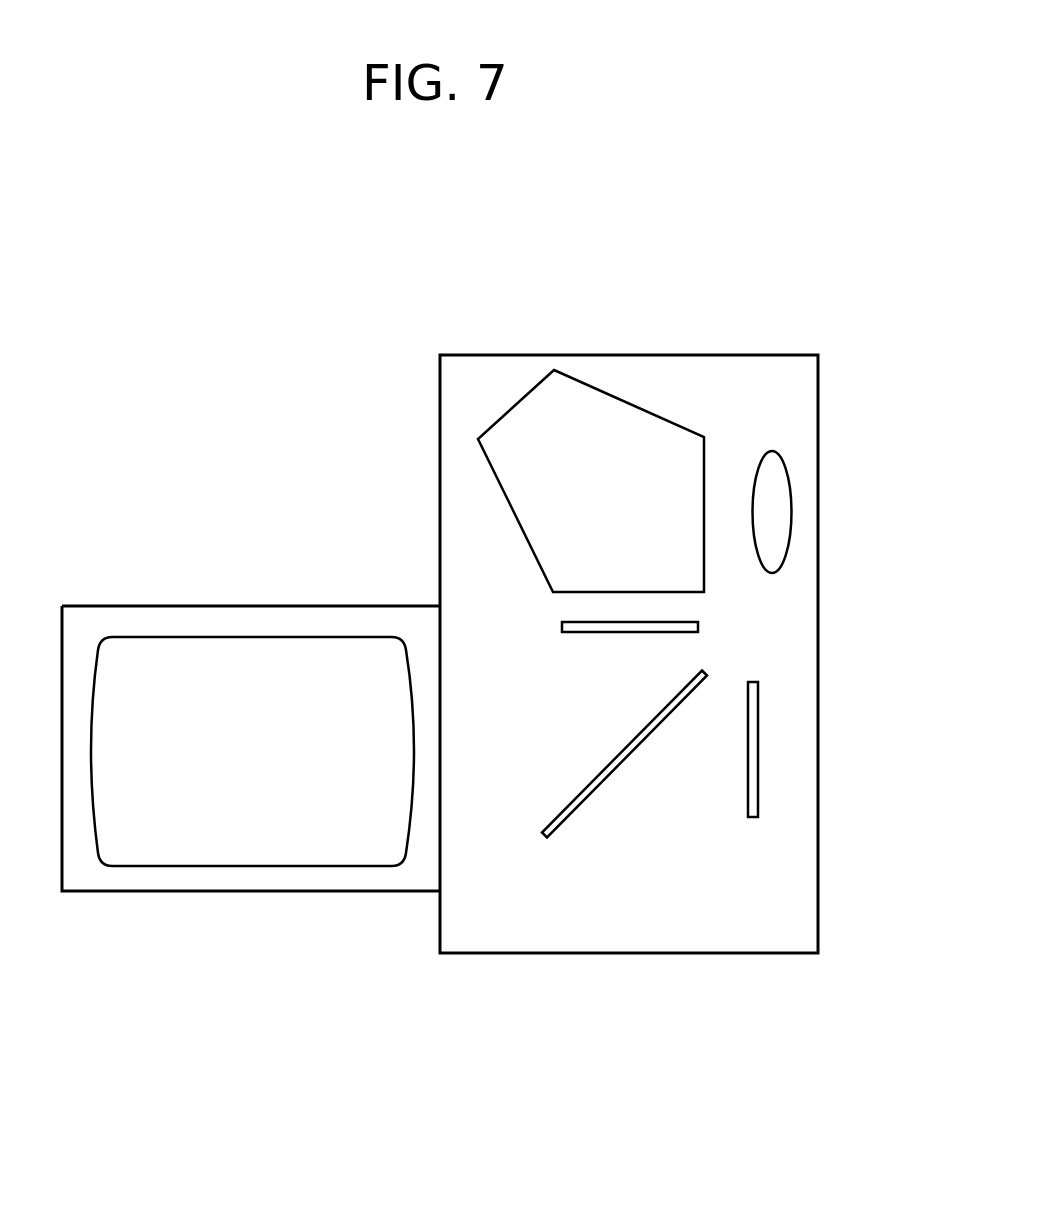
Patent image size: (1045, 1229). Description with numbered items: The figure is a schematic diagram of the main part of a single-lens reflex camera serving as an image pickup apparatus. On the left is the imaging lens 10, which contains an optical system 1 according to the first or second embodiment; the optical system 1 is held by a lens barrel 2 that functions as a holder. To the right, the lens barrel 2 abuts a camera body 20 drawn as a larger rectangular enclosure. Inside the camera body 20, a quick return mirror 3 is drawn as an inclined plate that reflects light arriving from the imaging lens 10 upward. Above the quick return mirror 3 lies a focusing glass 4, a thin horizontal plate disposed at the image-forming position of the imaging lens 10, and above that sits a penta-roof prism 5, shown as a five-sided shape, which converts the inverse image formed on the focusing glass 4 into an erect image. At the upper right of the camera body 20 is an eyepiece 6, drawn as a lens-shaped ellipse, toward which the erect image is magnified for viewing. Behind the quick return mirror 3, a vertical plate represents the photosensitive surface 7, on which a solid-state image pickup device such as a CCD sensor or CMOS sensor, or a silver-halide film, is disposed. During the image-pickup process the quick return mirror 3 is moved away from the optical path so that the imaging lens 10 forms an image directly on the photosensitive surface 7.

The optical system 1 is at (234, 652).
The lens barrel 2 is at (255, 893).
The quick return mirror 3 is at (592, 788).
The focusing glass 4 is at (587, 626).
The penta-roof prism 5 is at (538, 405).
The eyepiece 6 is at (785, 506).
The photosensitive surface 7 is at (753, 748).
The imaging lens 10 is at (255, 528).
The camera body 20 is at (763, 286).